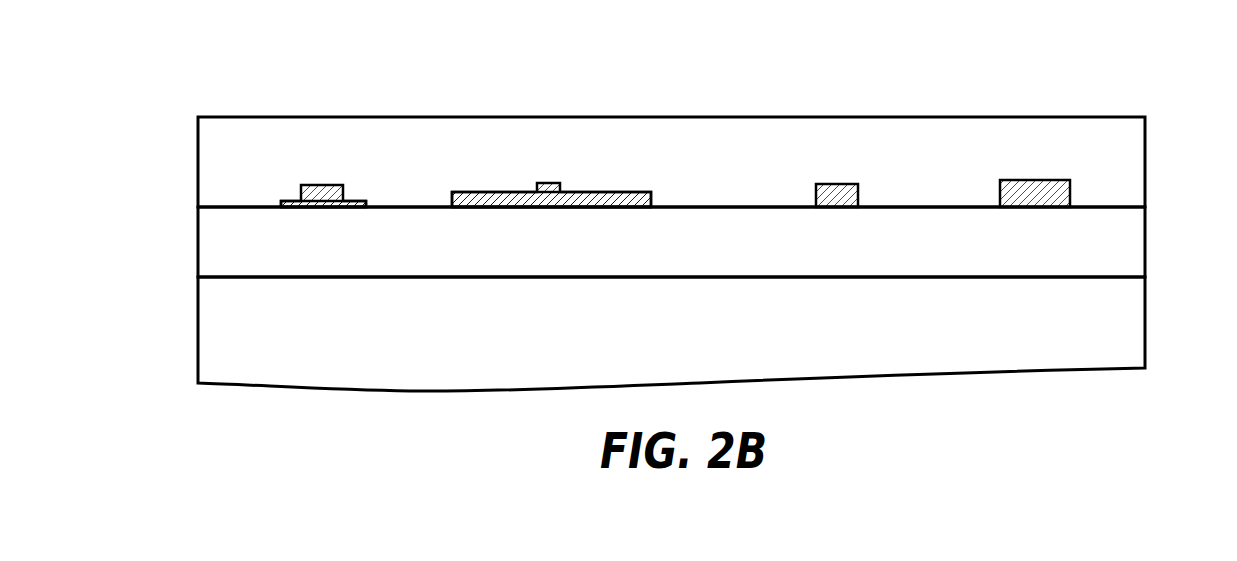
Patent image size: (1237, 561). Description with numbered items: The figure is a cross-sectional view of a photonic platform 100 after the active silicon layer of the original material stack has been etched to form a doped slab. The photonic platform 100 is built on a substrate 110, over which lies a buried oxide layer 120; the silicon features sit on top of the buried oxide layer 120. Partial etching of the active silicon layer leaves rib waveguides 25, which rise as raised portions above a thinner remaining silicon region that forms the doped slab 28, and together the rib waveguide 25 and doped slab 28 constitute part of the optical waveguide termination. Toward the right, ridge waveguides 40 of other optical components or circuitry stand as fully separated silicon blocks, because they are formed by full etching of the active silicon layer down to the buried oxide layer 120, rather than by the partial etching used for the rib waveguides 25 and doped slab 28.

The photonic platform 100 is at (1110, 49).
The substrate 110 is at (688, 347).
The buried oxide layer 120 is at (688, 258).
The rib waveguide 25 is at (540, 180).
The doped slab 28 is at (500, 205).
The ridge waveguides 40 is at (1036, 190).